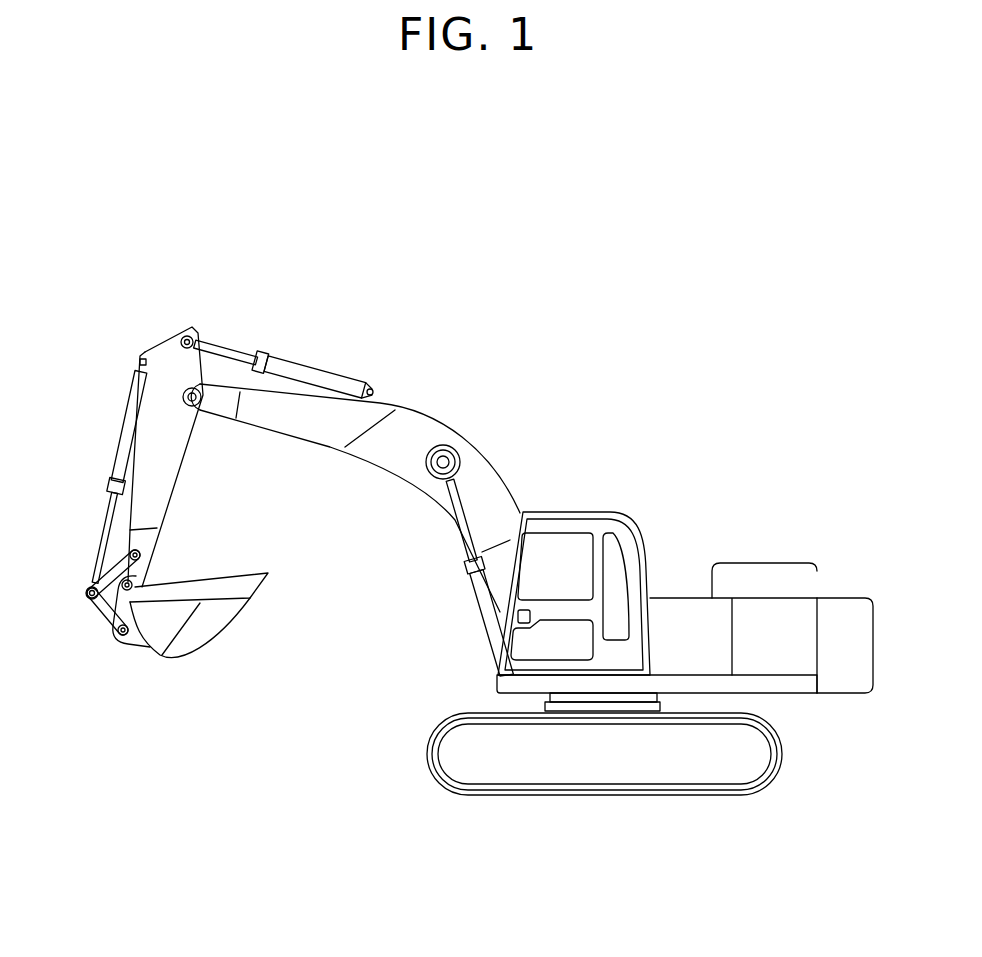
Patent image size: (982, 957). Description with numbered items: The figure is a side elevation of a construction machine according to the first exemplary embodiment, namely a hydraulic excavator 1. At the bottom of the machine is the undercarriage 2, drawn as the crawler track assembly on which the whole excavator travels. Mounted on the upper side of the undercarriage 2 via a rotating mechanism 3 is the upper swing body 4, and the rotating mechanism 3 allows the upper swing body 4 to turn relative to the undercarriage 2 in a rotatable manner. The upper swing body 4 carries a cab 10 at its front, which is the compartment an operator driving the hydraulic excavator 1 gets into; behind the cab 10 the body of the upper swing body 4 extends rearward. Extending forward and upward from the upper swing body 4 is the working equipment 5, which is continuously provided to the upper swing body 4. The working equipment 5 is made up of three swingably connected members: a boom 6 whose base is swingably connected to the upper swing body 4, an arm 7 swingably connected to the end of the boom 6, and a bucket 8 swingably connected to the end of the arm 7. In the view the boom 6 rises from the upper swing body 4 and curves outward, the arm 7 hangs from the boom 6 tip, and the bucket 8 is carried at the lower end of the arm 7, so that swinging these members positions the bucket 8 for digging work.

The hydraulic excavator 1 is at (457, 385).
The undercarriage 2 is at (544, 800).
The rotating mechanism 3 is at (644, 718).
The upper swing body 4 is at (681, 593).
The working equipment 5 is at (239, 313).
The boom 6 is at (403, 453).
The arm 7 is at (175, 462).
The bucket 8 is at (210, 625).
The cab 10 is at (585, 492).